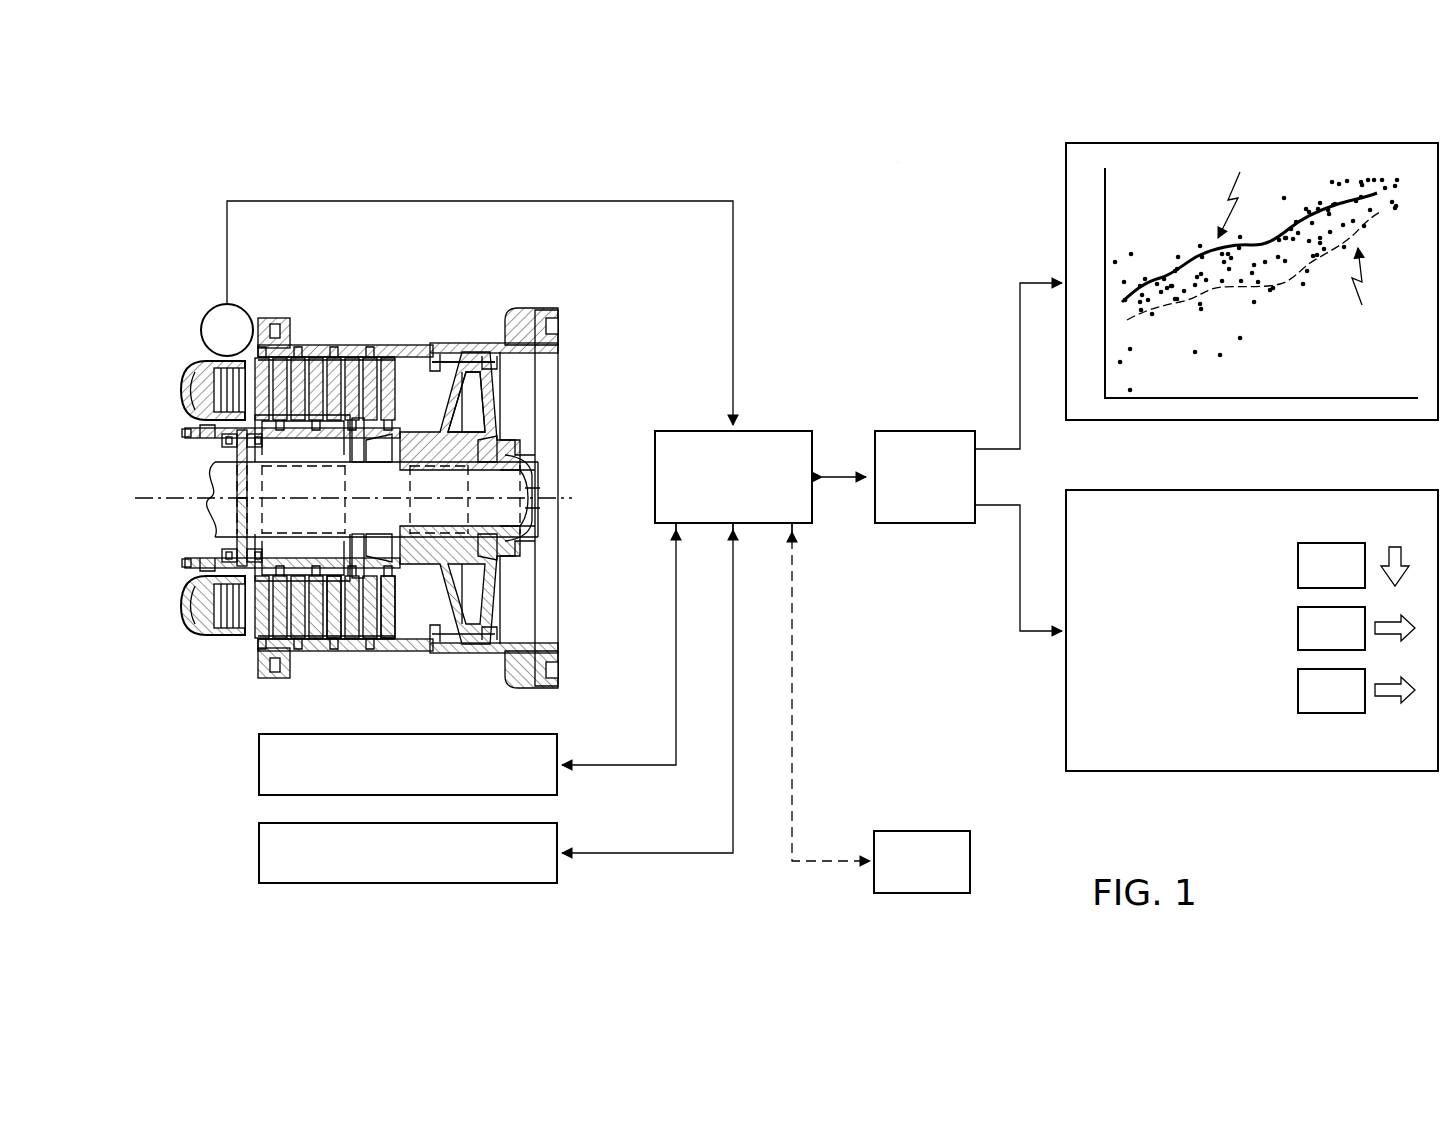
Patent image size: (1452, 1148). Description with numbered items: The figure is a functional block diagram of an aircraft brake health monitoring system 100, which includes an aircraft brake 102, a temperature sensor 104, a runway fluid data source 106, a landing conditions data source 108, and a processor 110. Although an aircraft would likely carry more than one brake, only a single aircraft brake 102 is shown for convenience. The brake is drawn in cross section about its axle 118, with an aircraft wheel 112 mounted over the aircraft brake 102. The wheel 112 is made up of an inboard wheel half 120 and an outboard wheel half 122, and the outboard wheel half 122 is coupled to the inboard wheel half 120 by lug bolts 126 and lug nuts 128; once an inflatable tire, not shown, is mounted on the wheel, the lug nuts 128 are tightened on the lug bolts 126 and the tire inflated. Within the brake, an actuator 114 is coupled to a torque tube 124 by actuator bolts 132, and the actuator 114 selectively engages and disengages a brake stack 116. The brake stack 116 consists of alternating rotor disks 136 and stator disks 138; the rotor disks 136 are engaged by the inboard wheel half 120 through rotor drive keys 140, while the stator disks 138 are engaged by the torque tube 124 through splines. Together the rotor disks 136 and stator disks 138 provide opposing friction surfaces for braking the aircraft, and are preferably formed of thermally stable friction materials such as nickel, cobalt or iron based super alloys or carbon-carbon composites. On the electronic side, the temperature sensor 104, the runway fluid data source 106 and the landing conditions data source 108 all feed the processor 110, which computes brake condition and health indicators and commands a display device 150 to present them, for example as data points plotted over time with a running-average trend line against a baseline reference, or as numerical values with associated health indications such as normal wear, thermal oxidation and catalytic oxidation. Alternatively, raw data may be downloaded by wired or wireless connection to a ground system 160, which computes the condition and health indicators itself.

The aircraft brake health monitoring system 100 is at (900, 160).
The aircraft brake 102 is at (410, 300).
The temperature sensor 104 is at (240, 306).
The runway fluid data source 106 is at (258, 765).
The landing conditions data source 108 is at (258, 853).
The processor 110 is at (783, 430).
The aircraft wheel 112 is at (438, 325).
The actuator 114 is at (178, 350).
The brake stack 116 is at (235, 664).
The axle 118 is at (333, 495).
The inboard wheel half 120 is at (352, 346).
The outboard wheel half 122 is at (512, 330).
The torque tube 124 is at (264, 536).
The lug bolts 126 is at (470, 357).
The lug nuts 128 is at (497, 362).
The actuator bolts 132 is at (195, 438).
The rotor disks 136 is at (313, 640).
The stator disks 138 is at (343, 635).
The rotor drive keys 140 is at (392, 636).
The display device 150 is at (920, 430).
The ground system 160 is at (920, 830).